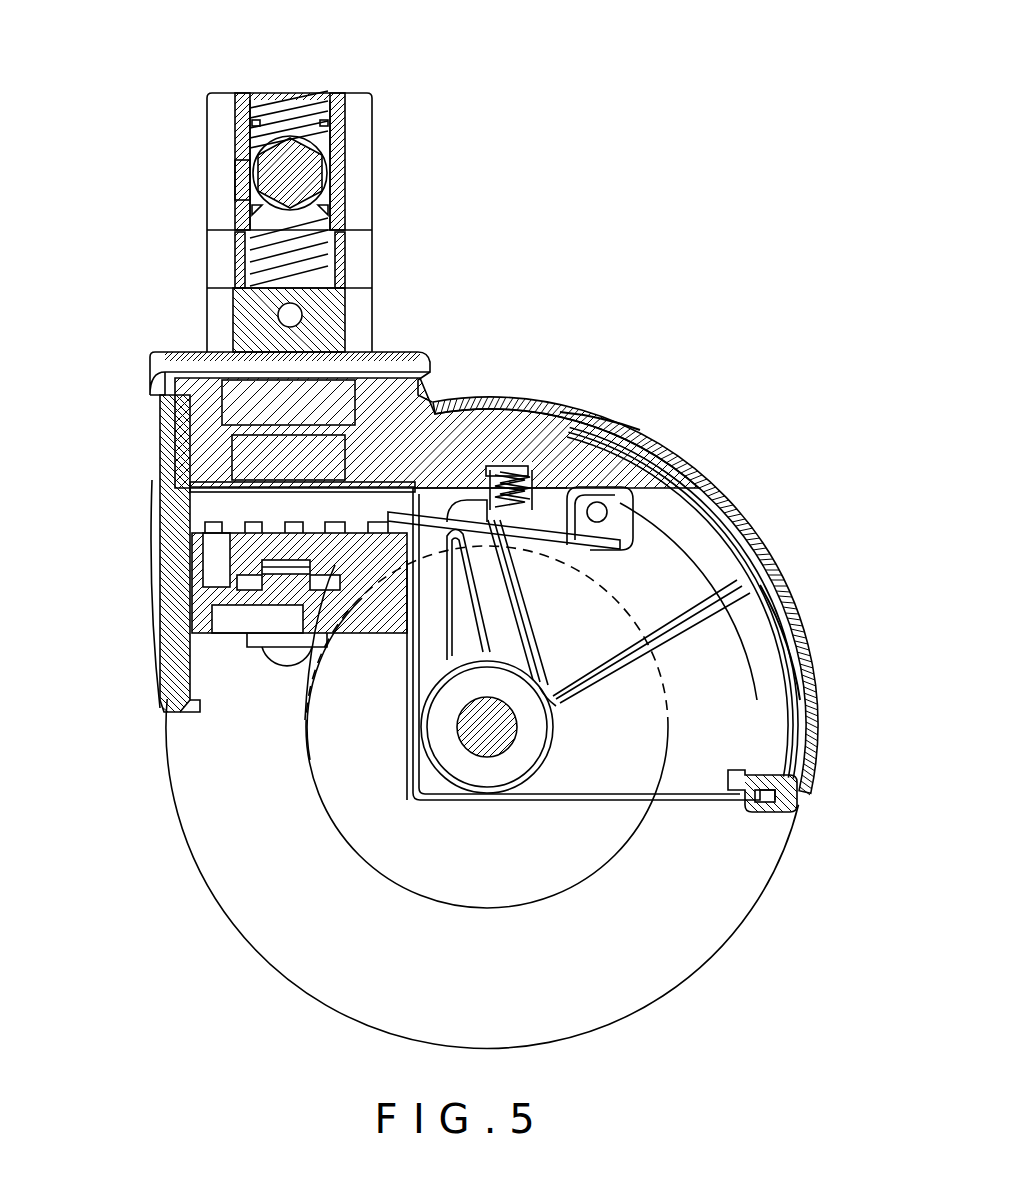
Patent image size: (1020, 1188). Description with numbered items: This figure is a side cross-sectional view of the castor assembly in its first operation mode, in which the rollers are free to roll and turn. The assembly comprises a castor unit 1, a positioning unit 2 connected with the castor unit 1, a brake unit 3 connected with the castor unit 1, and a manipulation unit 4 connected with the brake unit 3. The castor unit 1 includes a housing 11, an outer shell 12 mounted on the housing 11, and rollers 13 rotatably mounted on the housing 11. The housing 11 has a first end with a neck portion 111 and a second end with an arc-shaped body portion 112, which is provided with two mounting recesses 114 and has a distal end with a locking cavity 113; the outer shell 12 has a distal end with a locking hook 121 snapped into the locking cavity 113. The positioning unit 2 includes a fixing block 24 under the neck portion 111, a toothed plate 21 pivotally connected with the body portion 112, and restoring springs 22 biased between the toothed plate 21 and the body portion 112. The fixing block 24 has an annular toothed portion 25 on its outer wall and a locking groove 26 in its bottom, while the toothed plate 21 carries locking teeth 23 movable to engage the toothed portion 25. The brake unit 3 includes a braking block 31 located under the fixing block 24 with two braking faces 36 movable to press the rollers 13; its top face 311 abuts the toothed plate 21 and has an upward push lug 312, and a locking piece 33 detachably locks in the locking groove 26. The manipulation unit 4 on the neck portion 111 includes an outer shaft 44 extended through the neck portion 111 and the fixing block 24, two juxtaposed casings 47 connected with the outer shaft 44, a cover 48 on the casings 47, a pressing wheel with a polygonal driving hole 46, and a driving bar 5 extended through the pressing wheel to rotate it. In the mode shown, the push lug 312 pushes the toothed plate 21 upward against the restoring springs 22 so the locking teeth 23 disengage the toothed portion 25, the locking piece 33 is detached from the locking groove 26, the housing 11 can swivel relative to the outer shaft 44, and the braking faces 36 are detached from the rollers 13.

The castor unit 1 is at (454, 740).
The housing 11 is at (639, 581).
The neck portion 111 is at (165, 400).
The body portion 112 is at (784, 640).
The locking cavity 113 is at (805, 785).
The mounting recesses 114 is at (592, 426).
The outer shell 12 is at (618, 702).
The locking hook 121 is at (765, 812).
The rollers 13 is at (690, 957).
The positioning unit 2 is at (573, 374).
The toothed plate 21 is at (650, 500).
The restoring springs 22 is at (663, 477).
The locking teeth 23 is at (398, 508).
The fixing block 24 is at (172, 445).
The toothed portion 25 is at (492, 470).
The locking groove 26 is at (248, 530).
The brake unit 3 is at (238, 643).
The braking block 31 is at (176, 625).
The top face 311 is at (235, 492).
The push lug 312 is at (507, 467).
The locking piece 33 is at (288, 566).
The braking faces 36 is at (372, 578).
The manipulation unit 4 is at (365, 184).
The outer shaft 44 is at (210, 310).
The polygonal driving hole 46 is at (347, 172).
The casings 47 is at (277, 100).
The cover 48 is at (338, 98).
The driving bar 5 is at (235, 178).